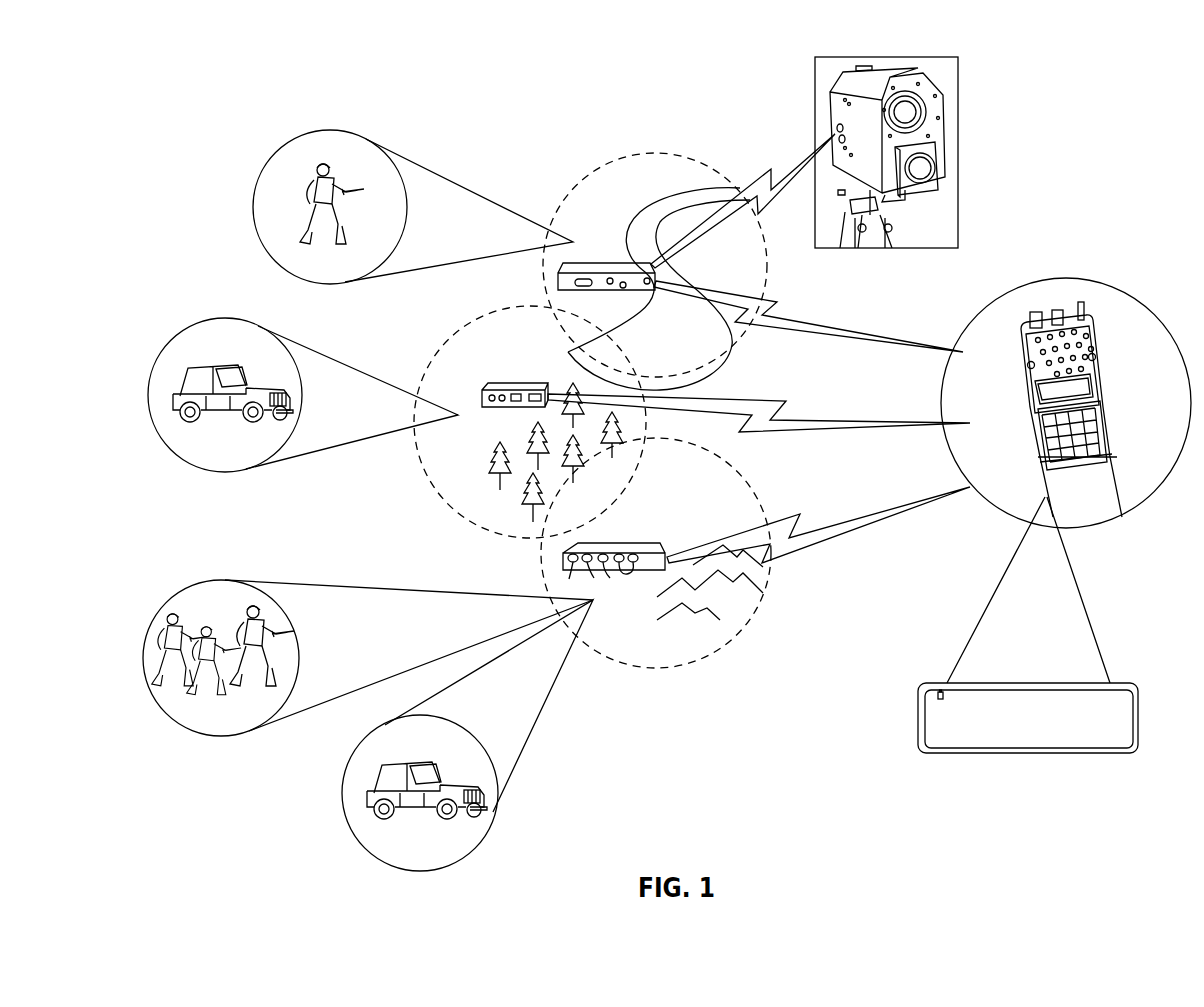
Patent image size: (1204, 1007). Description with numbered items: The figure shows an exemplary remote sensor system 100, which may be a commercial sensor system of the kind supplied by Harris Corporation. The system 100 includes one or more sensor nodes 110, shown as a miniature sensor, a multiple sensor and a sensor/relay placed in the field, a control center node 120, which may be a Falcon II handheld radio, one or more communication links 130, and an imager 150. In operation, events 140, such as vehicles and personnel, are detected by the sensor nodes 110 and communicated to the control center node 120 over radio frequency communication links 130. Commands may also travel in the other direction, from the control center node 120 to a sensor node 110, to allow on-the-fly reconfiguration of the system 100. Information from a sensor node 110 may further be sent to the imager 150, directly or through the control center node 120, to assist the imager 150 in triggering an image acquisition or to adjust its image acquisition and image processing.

The remote sensor system 100 is at (258, 70).
The sensor node 110 is at (658, 152).
The control center node 120 is at (1065, 278).
The communication link 130 is at (762, 170).
The event 140 is at (331, 130).
The imager 150 is at (878, 57).